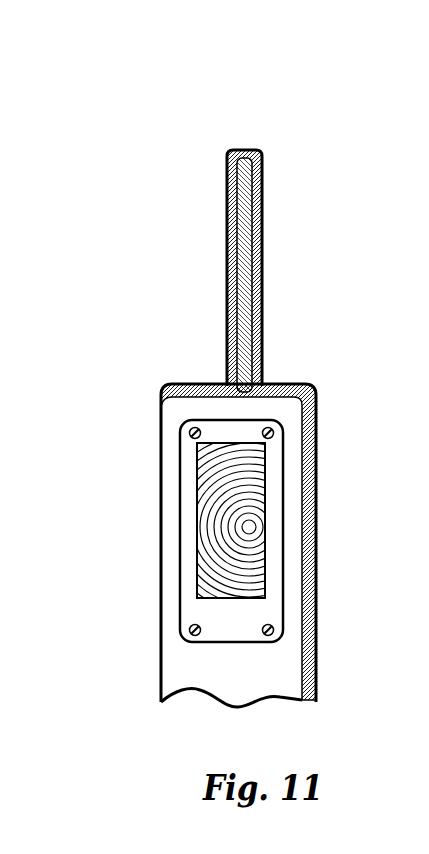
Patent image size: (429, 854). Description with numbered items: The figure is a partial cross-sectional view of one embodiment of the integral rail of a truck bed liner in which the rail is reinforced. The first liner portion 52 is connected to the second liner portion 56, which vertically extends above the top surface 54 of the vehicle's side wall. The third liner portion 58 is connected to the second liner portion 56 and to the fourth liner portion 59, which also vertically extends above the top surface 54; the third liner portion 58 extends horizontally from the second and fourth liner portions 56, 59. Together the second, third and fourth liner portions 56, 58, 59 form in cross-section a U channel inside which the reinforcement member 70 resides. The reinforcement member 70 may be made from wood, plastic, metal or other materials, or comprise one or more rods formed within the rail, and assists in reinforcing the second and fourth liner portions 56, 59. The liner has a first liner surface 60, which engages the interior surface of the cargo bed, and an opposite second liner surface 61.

The first liner portion 52 is at (310, 520).
The top surface 54 is at (168, 400).
The second liner portion 56 is at (263, 240).
The third liner portion 58 is at (248, 149).
The fourth liner portion 59 is at (237, 234).
The first liner surface 60 is at (300, 680).
The second liner surface 61 is at (312, 606).
The reinforcement member 70 is at (250, 191).